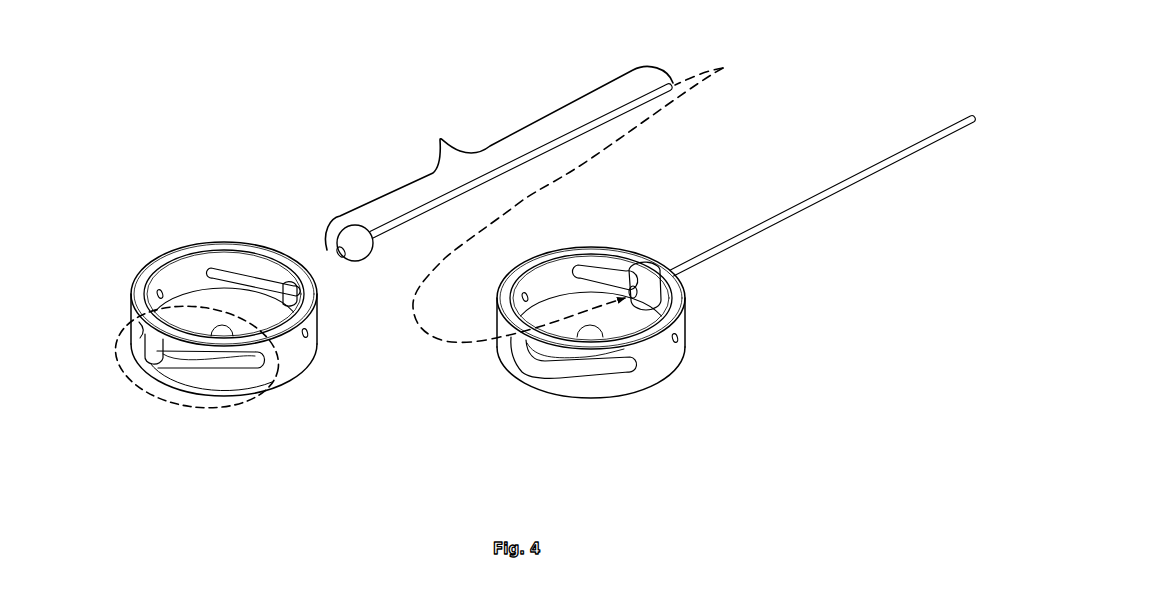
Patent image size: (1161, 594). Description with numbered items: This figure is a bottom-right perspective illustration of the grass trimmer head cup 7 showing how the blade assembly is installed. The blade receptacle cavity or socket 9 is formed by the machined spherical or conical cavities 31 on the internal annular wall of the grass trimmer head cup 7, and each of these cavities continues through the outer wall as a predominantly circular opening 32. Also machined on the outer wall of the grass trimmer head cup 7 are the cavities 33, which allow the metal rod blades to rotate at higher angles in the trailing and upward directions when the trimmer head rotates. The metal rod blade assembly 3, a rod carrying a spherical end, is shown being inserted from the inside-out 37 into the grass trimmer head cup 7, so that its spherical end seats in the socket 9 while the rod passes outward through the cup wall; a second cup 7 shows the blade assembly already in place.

The metal rod blade assembly 3 is at (441, 134).
The grass trimmer head cup 7 is at (204, 247).
The blade receptacle cavity or socket 9 is at (219, 413).
The machined spherical or conical cavities 31 is at (287, 295).
The predominantly circular openings 32 is at (142, 329).
The machined cavities 33 is at (249, 278).
The inside-out insertion direction 37 is at (727, 69).